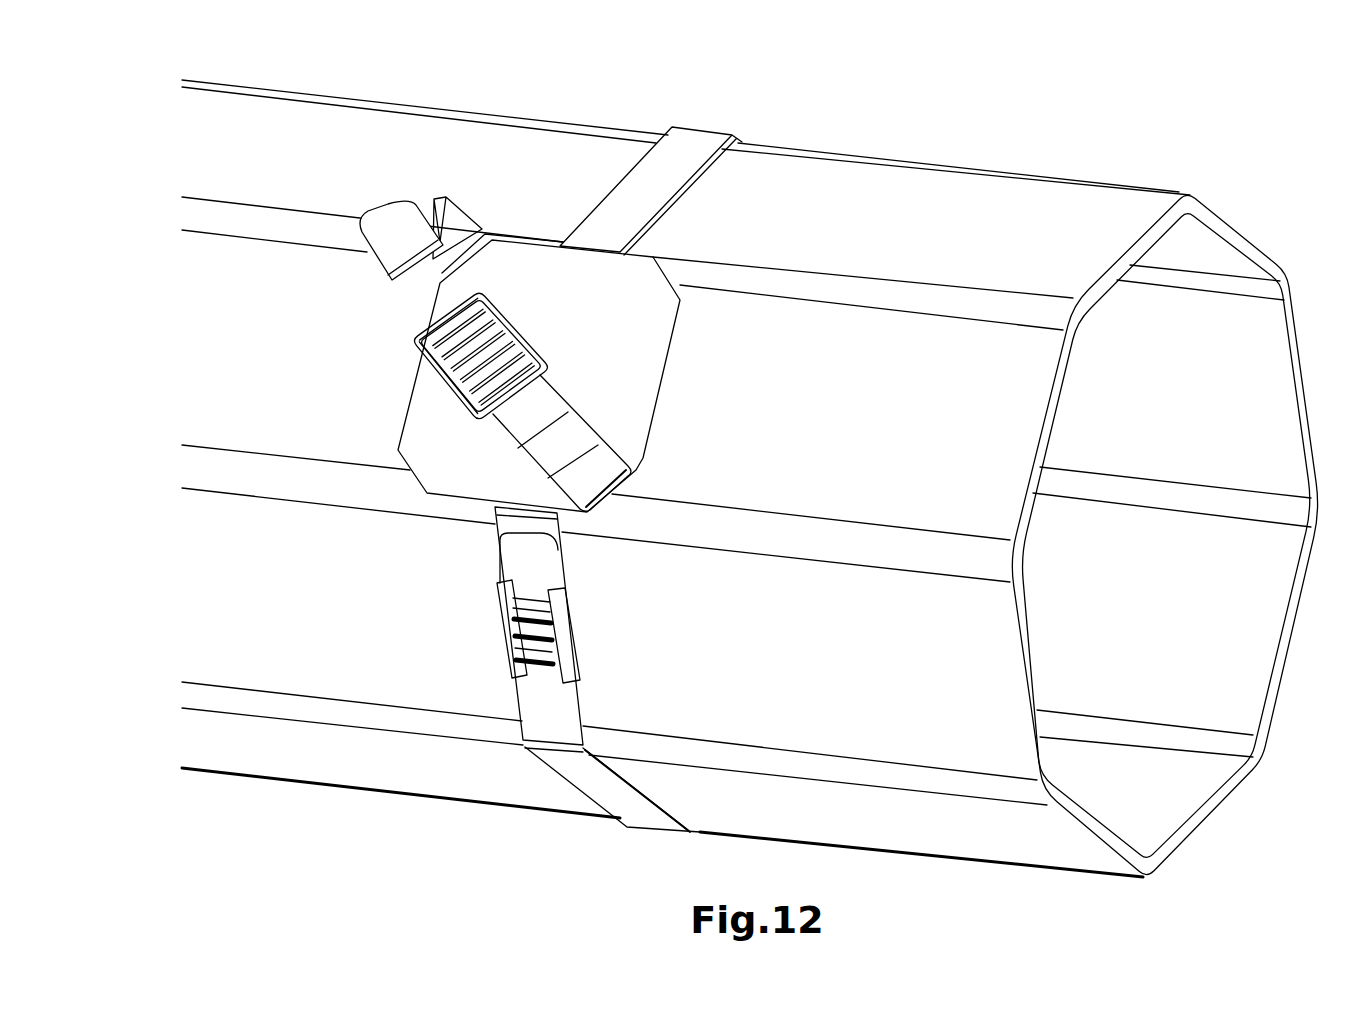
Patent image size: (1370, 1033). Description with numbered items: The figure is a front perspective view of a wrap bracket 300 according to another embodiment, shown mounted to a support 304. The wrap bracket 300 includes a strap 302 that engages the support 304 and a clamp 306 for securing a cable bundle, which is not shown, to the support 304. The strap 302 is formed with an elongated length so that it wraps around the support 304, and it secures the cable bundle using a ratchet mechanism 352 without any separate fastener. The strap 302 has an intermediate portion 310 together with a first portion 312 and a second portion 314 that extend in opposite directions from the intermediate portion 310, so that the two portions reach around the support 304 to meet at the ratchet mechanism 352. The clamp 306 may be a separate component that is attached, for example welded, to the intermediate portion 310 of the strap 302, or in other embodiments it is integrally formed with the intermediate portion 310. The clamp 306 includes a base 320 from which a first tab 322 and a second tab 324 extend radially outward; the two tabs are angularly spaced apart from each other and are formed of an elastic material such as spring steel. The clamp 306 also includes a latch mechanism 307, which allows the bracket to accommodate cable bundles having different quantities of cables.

The wrap bracket 300 is at (750, 453).
The strap 302 is at (517, 453).
The support 304 is at (1022, 210).
The clamp 306 is at (557, 354).
The latch mechanism 307 is at (367, 265).
The intermediate portion 310 is at (557, 354).
The first portion 312 is at (623, 212).
The second portion 314 is at (523, 692).
The base 320 is at (423, 427).
The first tab 322 is at (457, 226).
The second tab 324 is at (590, 477).
The ratchet mechanism 352 is at (474, 660).